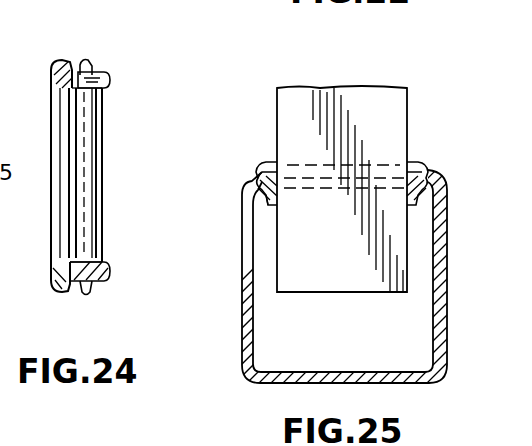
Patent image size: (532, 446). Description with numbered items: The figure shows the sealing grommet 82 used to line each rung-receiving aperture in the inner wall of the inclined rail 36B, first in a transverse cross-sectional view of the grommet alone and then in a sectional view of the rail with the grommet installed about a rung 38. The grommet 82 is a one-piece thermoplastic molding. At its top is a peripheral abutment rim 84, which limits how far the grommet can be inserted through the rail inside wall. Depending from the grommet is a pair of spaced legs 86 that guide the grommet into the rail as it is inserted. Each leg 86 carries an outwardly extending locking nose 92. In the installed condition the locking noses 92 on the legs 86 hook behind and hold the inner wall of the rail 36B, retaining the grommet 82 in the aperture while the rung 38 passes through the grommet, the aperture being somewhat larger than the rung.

In FIG. 24, the sealing grommet 82 is at (124, 138).
In FIG. 25, the sealing grommet 82 is at (262, 163).
In FIG. 24, the peripheral abutment rim 84 is at (58, 64).
In FIG. 24, the dependent legs 86 is at (107, 80).
In FIG. 25, the dependent legs 86 is at (270, 216).
In FIG. 24, the locking nose 92 is at (85, 62).
In FIG. 25, the locking nose 92 is at (258, 200).
In FIG. 25, the rung 38 is at (408, 122).
In FIG. 25, the inclined rail 36B is at (242, 290).